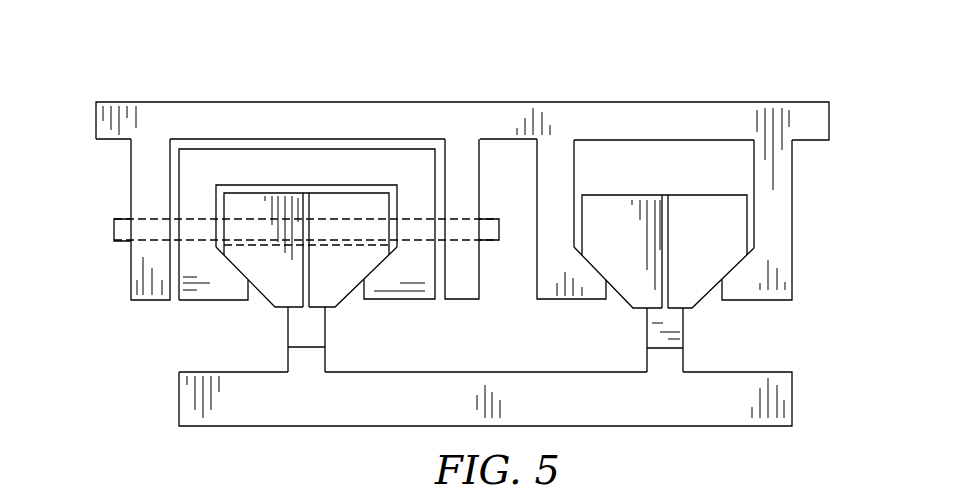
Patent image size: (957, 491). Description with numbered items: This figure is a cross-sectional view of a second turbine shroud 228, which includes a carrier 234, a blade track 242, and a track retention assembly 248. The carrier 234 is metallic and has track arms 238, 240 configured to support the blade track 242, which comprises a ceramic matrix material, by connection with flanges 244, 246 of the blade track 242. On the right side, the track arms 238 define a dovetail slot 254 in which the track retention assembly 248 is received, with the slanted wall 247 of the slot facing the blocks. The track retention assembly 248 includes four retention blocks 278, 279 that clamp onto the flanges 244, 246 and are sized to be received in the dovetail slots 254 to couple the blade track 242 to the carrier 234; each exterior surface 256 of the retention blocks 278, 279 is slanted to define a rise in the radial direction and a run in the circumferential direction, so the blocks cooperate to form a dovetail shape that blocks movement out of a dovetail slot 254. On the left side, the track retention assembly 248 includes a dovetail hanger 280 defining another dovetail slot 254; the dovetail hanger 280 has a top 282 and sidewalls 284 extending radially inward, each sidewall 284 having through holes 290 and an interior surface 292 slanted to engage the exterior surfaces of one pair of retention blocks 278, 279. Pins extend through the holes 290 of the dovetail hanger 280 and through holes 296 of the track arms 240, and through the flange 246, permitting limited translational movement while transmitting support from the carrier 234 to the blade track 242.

The turbine shroud 228 is at (98, 98).
The carrier 234 is at (462, 116).
The dovetail slot 254 is at (362, 189).
The track arm 240 is at (141, 175).
The hole 296 is at (134, 230).
The top 282 is at (297, 176).
The through hole 290 is at (183, 232).
The track arm 238 is at (557, 184).
The exterior surface 256 is at (618, 278).
The inclined wall 247 is at (578, 263).
The retention block 278 is at (278, 253).
The retention block 279 is at (330, 266).
The sidewall 284 is at (221, 303).
The dovetail hanger 280 is at (200, 274).
The interior surface 292 is at (229, 268).
The track retention assembly 248 is at (380, 327).
The flange 246 is at (302, 353).
The flange 244 is at (667, 340).
The blade track 242 is at (766, 397).